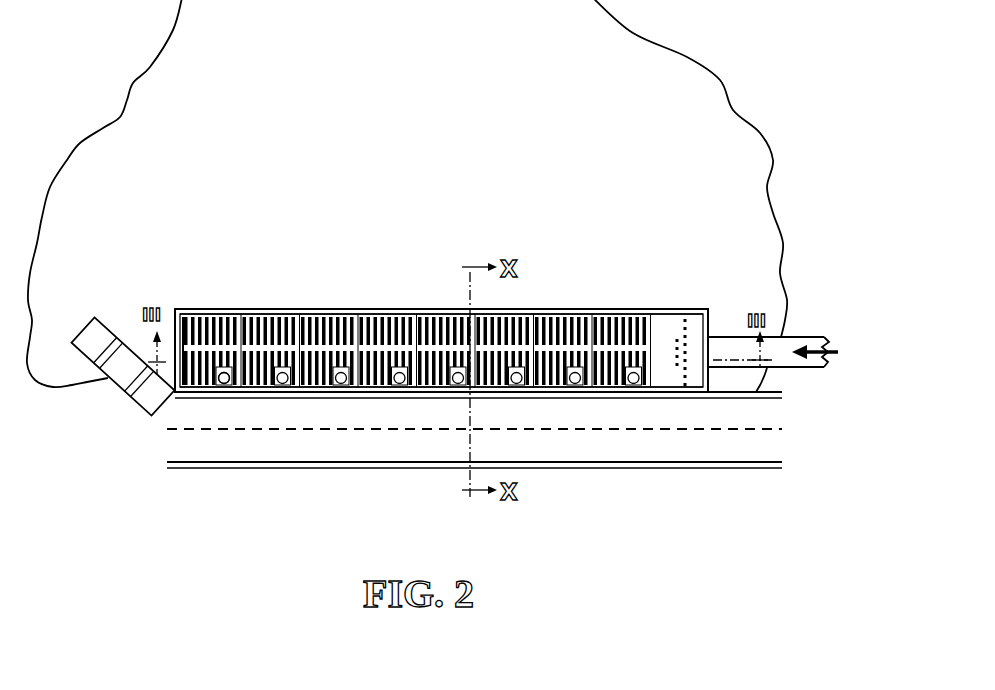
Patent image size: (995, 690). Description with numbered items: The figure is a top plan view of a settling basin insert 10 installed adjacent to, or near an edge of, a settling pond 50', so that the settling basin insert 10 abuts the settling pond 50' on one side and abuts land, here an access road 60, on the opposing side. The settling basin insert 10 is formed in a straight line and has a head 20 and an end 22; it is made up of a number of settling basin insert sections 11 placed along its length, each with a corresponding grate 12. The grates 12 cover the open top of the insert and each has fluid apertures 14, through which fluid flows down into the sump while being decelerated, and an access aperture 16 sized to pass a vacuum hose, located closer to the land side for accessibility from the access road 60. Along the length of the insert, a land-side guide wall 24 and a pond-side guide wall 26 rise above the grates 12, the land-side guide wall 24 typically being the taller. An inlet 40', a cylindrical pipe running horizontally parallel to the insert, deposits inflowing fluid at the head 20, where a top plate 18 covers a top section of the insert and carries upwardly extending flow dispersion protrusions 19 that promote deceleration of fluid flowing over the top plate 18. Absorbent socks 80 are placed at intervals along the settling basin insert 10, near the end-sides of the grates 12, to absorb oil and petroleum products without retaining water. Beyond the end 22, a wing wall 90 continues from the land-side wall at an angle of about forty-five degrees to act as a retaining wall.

The settling basin insert 10 is at (478, 335).
The settling basin insert section 11 is at (648, 300).
The grate 12 is at (183, 317).
The fluid apertures 14 is at (187, 387).
The access aperture 16 is at (224, 386).
The top plate 18 is at (668, 316).
The flow dispersion protrusions 19 is at (687, 316).
The head 20 is at (710, 393).
The end 22 is at (177, 371).
The land-side guide wall 24 is at (612, 393).
The pond-side guide wall 26 is at (330, 312).
The inlet 40' is at (773, 329).
The settling pond 50' is at (407, 196).
The access road 60 is at (460, 457).
The absorbent socks 80 is at (417, 314).
The wing wall 90 is at (111, 329).